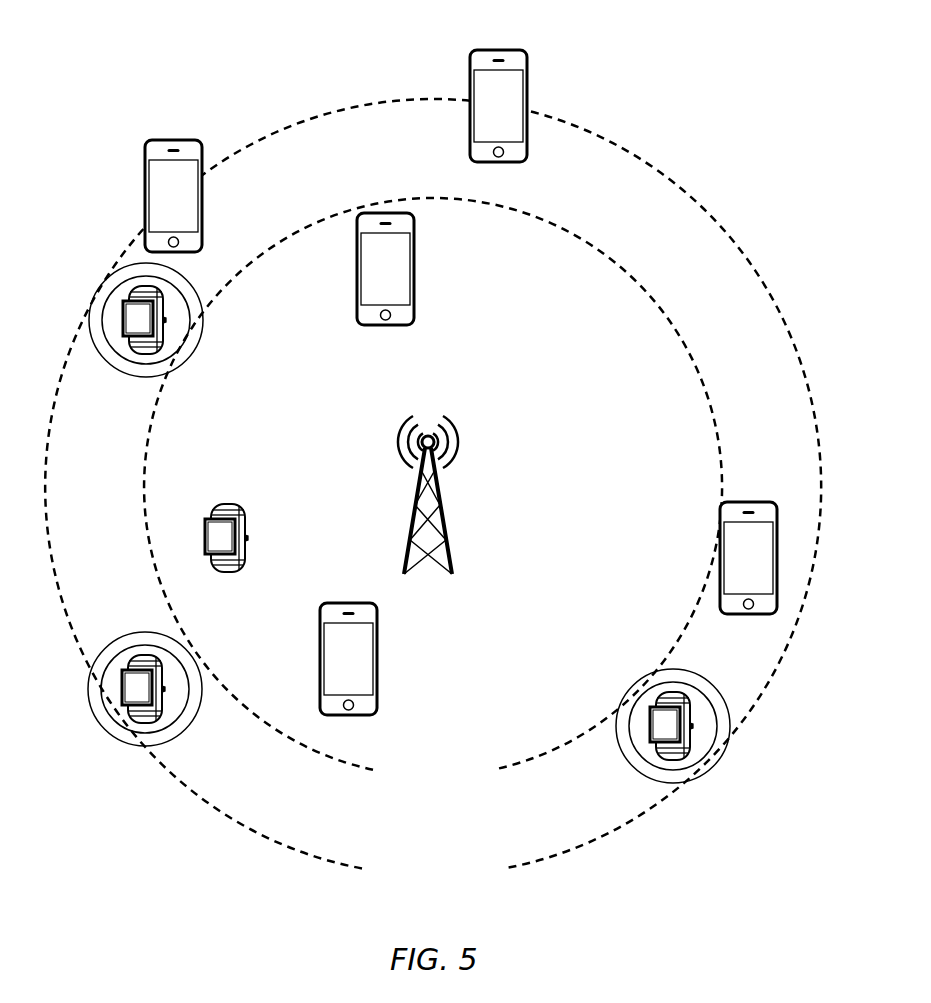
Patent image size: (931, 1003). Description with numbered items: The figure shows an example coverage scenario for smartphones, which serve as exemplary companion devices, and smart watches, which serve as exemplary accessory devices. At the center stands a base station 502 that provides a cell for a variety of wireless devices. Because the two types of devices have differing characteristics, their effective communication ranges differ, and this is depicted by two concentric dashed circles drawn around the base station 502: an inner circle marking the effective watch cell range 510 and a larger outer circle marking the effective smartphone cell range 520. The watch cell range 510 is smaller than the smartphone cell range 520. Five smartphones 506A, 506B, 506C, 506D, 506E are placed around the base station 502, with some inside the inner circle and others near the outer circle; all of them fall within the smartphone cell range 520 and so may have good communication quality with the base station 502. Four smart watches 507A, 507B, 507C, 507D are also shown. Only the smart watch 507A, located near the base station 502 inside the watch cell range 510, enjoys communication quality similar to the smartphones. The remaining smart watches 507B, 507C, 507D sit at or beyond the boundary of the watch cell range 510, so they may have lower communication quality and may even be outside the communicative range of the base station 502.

The base station 502 is at (450, 524).
The smartphone 506A is at (340, 603).
The smartphone 506B is at (166, 140).
The smartphone 506C is at (497, 50).
The smartphone 506D is at (754, 502).
The smartphone 506E is at (418, 277).
The smart watch 507A is at (243, 513).
The smart watch 507B is at (108, 363).
The smart watch 507C is at (117, 637).
The smart watch 507D is at (628, 759).
The watch cell range 510 is at (487, 796).
The smartphone cell range 520 is at (450, 910).